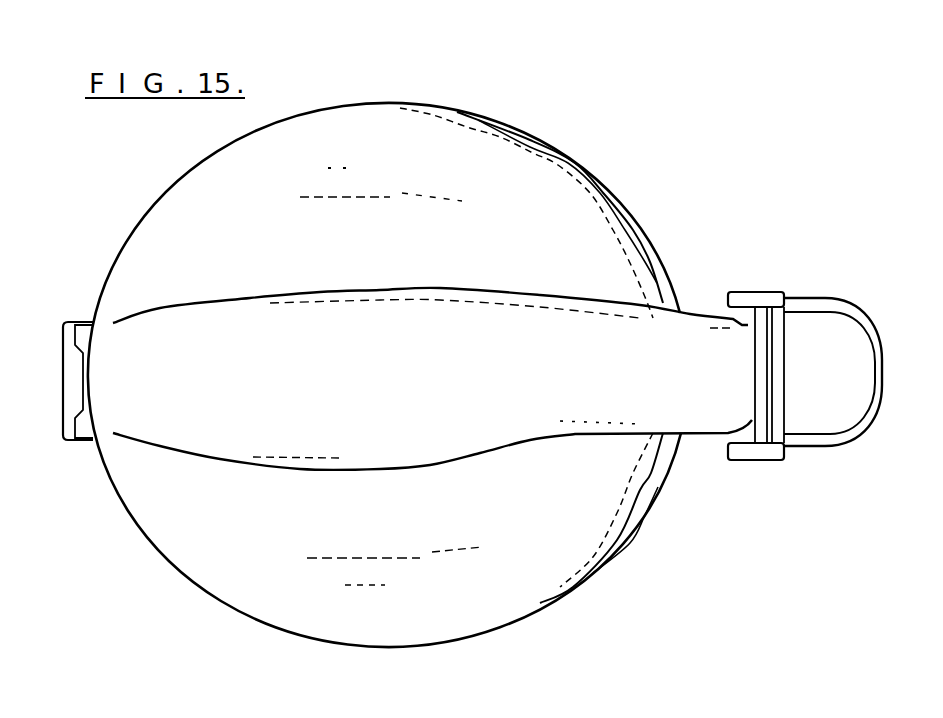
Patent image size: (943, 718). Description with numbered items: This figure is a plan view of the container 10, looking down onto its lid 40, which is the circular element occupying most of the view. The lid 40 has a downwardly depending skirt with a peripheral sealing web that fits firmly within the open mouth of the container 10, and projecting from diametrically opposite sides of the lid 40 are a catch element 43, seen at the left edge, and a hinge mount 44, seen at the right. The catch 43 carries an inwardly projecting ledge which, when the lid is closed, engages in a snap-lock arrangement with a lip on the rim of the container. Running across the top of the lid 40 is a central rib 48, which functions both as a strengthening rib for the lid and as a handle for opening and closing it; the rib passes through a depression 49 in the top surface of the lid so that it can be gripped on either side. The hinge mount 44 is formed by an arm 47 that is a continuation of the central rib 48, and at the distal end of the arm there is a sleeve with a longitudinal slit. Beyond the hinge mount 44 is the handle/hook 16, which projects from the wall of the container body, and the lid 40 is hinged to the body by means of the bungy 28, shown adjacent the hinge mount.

The container 10 is at (641, 529).
The handle/hook 16 is at (819, 298).
The bungy 28 is at (760, 460).
The lid 40 is at (460, 108).
The catch element 43 is at (64, 397).
The hinge mount 44 is at (728, 294).
The arm 47 is at (688, 312).
The central rib 48 is at (480, 343).
The depression 49 is at (240, 493).